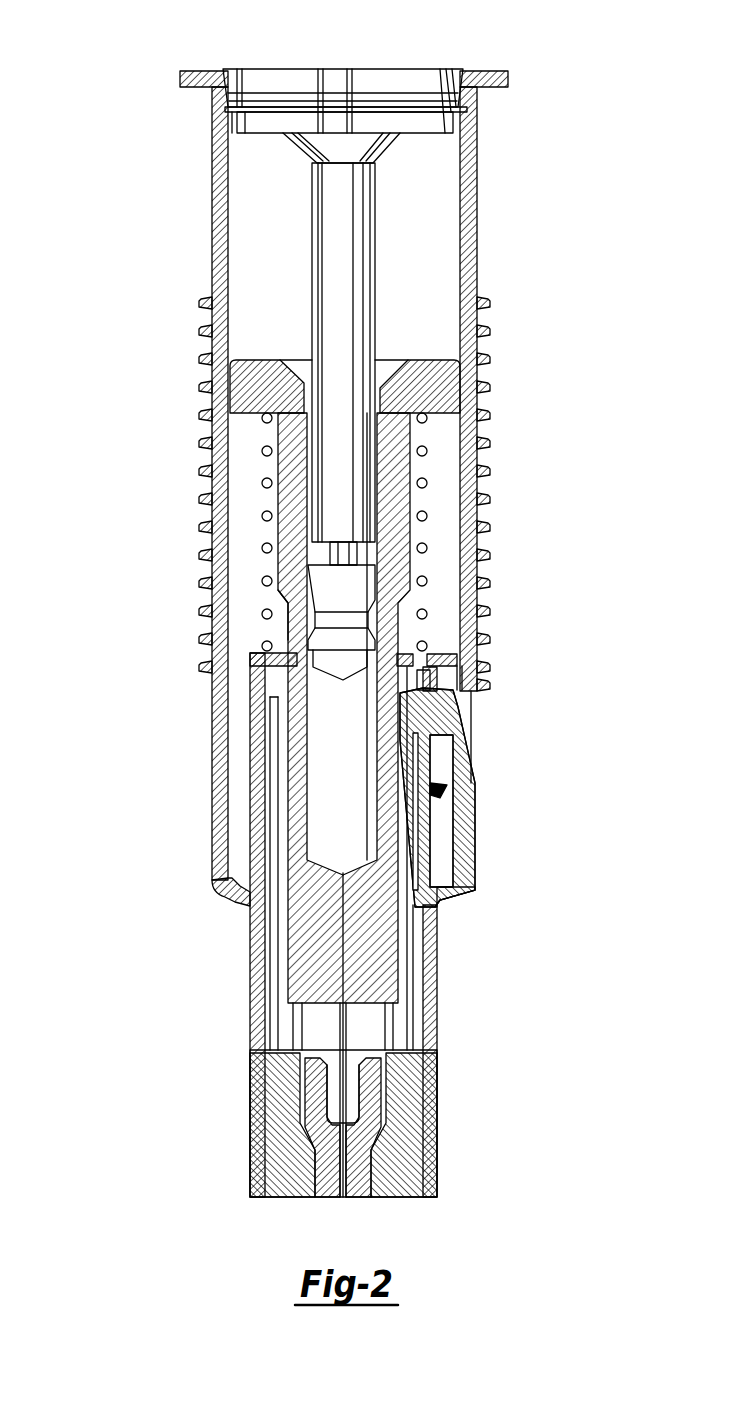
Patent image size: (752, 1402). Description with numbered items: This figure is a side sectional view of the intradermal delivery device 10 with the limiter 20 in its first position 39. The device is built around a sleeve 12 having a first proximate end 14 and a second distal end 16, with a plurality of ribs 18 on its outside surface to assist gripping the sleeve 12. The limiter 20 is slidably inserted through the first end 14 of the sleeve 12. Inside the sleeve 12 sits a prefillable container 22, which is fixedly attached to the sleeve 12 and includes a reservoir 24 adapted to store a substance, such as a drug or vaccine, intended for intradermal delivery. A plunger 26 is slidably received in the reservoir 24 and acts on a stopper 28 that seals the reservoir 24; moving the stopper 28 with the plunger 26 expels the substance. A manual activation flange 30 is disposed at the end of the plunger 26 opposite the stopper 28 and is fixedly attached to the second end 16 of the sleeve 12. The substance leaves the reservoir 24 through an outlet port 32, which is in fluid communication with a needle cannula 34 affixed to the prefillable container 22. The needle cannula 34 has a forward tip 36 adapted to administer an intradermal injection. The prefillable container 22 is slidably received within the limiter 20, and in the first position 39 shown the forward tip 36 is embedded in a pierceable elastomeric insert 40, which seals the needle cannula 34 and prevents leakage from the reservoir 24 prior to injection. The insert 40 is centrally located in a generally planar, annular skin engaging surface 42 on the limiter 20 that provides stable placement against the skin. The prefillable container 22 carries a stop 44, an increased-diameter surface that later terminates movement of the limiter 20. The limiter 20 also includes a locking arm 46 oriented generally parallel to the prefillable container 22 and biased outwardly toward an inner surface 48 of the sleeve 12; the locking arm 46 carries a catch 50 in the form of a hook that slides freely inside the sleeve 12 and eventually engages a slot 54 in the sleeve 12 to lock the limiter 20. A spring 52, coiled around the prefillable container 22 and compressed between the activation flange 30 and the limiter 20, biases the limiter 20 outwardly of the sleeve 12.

The intradermal delivery device 10 is at (140, 178).
The sleeve 12 is at (477, 200).
The first proximate end 14 is at (475, 890).
The second distal end 16 is at (508, 78).
The ribs 18 is at (212, 360).
The limiter 20 is at (250, 1000).
The prefillable container 22 is at (410, 508).
The reservoir 24 is at (294, 731).
The plunger 26 is at (345, 258).
The stopper 28 is at (342, 648).
The activation flange 30 is at (340, 70).
The outlet port 32 is at (343, 870).
The needle cannula 34 is at (346, 1012).
The forward tip 36 is at (350, 1200).
The first position 39 is at (276, 1156).
The elastomeric insert 40 is at (328, 1200).
The skin engaging surface 42 is at (390, 1200).
The stop 44 is at (280, 600).
The locking arm 46 is at (437, 792).
The inner surface 48 is at (445, 606).
The catch 50 is at (458, 725).
The spring 52 is at (262, 548).
The slot 54 is at (479, 786).